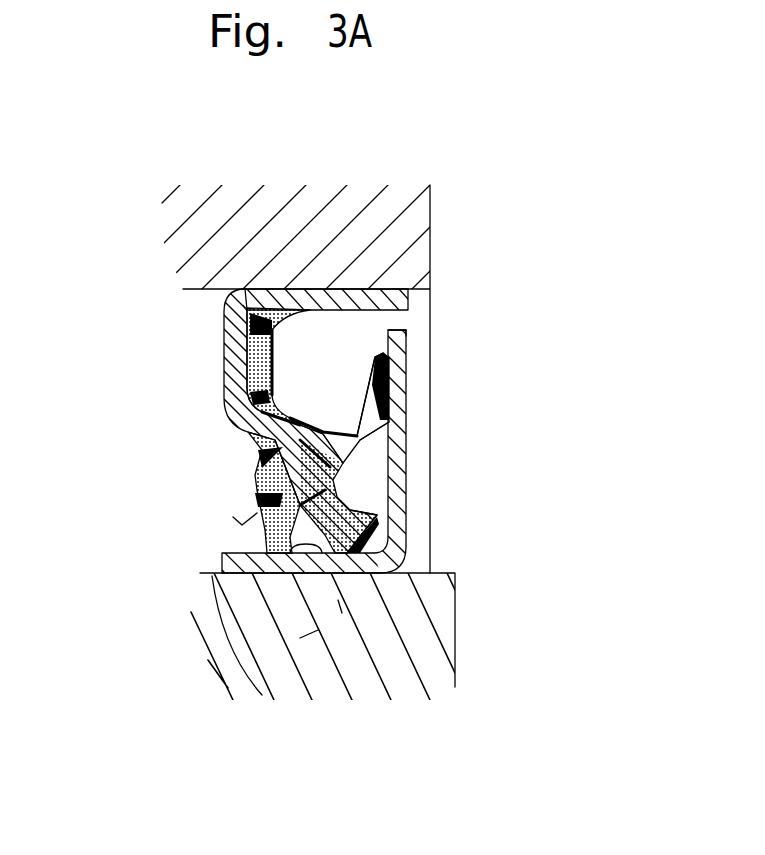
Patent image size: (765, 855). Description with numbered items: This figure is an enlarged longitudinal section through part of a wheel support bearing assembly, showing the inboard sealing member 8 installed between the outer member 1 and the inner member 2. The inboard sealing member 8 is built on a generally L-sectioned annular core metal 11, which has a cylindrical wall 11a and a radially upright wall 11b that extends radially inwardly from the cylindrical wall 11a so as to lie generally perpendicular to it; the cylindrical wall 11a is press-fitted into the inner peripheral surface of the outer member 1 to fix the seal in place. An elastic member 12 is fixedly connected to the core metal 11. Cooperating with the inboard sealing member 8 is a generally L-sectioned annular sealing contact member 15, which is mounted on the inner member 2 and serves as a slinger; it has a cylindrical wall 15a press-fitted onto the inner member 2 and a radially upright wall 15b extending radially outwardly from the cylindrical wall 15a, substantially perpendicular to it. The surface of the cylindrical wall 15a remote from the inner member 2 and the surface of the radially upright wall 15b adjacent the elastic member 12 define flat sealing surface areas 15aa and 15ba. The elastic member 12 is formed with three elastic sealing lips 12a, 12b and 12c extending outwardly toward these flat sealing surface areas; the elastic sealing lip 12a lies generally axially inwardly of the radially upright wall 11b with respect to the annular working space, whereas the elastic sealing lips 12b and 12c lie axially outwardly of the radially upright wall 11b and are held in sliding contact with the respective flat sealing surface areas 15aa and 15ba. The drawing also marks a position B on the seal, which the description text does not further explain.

The outer member 1 is at (407, 225).
The inner member 2 is at (455, 637).
The inboard sealing member 8 is at (211, 369).
The core metal 11 is at (268, 323).
The cylindrical wall 11a is at (282, 310).
The radially upright wall 11b is at (222, 328).
The elastic member 12 is at (331, 416).
The elastic sealing lip 12a is at (260, 527).
The elastic sealing lip 12b is at (352, 510).
The elastic sealing lip 12c is at (456, 387).
The annular sealing contact member 15 is at (334, 533).
The cylindrical wall 15a is at (330, 577).
The radially upright wall 15b is at (405, 545).
The flat sealing surface area 15aa is at (295, 552).
The flat sealing surface area 15ba is at (393, 425).
The reference position B is at (235, 517).